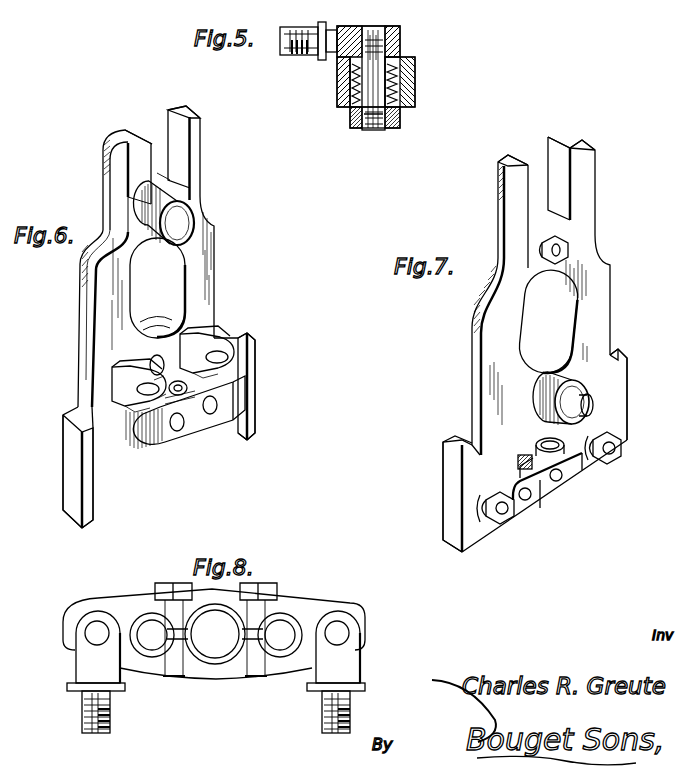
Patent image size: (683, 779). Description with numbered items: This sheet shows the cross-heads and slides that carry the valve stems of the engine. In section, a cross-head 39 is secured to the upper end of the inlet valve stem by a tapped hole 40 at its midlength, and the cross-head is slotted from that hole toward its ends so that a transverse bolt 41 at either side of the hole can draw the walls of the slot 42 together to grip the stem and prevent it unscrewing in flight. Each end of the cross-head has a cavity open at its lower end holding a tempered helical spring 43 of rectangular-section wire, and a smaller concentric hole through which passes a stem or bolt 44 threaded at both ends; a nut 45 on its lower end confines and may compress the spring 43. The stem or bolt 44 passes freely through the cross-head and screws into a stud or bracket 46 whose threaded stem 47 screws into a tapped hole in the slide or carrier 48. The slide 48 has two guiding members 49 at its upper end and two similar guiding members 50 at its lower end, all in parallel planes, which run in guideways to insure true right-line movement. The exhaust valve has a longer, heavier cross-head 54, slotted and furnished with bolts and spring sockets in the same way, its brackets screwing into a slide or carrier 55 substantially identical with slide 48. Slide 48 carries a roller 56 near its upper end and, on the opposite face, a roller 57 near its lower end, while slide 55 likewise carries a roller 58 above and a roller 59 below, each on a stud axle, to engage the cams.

In FIG. 6, the cross-head 39 is at (130, 432).
In FIG. 6, the tapped hole 40 is at (173, 432).
In FIG. 6, the transverse bolt 41 is at (208, 415).
In FIG. 7, the transverse bolt 41 is at (528, 499).
In FIG. 8, the transverse bolt 41 is at (252, 673).
In FIG. 5, the slot 42 is at (338, 89).
In FIG. 6, the slot 42 is at (225, 398).
In FIG. 5, the helical spring 43 is at (338, 73).
In FIG. 5, the stem or bolt 44 is at (372, 118).
In FIG. 6, the stem or bolt 44 is at (228, 357).
In FIG. 5, the nut 45 is at (402, 125).
In FIG. 5, the stud or bracket 46 is at (398, 31).
In FIG. 6, the stud or bracket 46 is at (218, 322).
In FIG. 8, the stud or bracket 46 is at (216, 651).
In FIG. 5, the threaded stem 47 is at (288, 42).
In FIG. 8, the threaded stem 47 is at (108, 707).
In FIG. 6, the slide or carrier 48 is at (210, 268).
In FIG. 6, the guiding members 49 is at (152, 163).
In FIG. 7, the guiding members 49 is at (563, 144).
In FIG. 6, the guiding members 50 is at (122, 420).
In FIG. 7, the guiding members 50 is at (446, 459).
In FIG. 5, the cross-head 54 is at (415, 72).
In FIG. 7, the cross-head 54 is at (573, 472).
In FIG. 8, the cross-head 54 is at (305, 601).
In FIG. 7, the slide or carrier 55 is at (597, 308).
In FIG. 6, the roller 56 is at (200, 195).
In FIG. 6, the roller 57 is at (140, 324).
In FIG. 7, the roller 57 is at (548, 322).
In FIG. 7, the roller 58 is at (536, 223).
In FIG. 7, the roller 59 is at (540, 394).